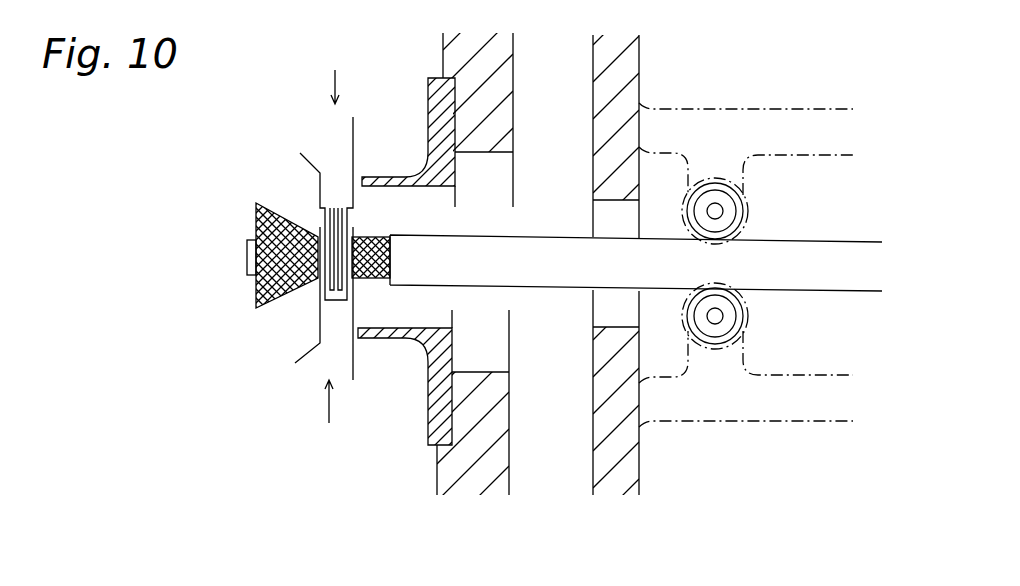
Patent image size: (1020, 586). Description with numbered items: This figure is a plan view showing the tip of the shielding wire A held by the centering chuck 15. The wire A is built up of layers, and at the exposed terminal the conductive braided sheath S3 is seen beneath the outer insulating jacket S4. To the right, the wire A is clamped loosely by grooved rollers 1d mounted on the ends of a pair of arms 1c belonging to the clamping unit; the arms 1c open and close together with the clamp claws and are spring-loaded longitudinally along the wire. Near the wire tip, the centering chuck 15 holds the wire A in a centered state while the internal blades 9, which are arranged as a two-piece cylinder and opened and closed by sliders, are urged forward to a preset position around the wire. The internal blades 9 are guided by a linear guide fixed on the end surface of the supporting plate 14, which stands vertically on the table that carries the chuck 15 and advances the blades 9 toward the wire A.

The arms 1c is at (815, 123).
The grooved rollers 1d is at (720, 183).
The internal blades 9 is at (382, 177).
The supporting plate 14 is at (626, 68).
The centering chuck 15 is at (328, 160).
The wire A is at (826, 241).
The braided sheath S3 is at (262, 312).
The outer insulating jacket S4 is at (833, 283).